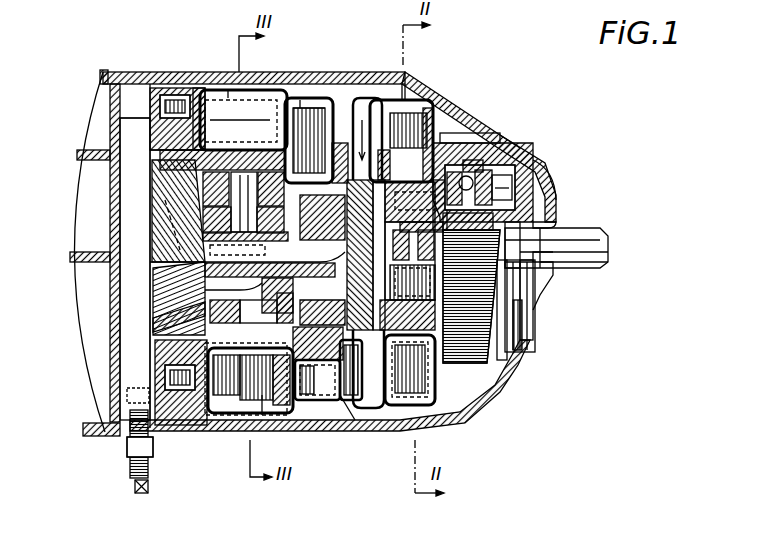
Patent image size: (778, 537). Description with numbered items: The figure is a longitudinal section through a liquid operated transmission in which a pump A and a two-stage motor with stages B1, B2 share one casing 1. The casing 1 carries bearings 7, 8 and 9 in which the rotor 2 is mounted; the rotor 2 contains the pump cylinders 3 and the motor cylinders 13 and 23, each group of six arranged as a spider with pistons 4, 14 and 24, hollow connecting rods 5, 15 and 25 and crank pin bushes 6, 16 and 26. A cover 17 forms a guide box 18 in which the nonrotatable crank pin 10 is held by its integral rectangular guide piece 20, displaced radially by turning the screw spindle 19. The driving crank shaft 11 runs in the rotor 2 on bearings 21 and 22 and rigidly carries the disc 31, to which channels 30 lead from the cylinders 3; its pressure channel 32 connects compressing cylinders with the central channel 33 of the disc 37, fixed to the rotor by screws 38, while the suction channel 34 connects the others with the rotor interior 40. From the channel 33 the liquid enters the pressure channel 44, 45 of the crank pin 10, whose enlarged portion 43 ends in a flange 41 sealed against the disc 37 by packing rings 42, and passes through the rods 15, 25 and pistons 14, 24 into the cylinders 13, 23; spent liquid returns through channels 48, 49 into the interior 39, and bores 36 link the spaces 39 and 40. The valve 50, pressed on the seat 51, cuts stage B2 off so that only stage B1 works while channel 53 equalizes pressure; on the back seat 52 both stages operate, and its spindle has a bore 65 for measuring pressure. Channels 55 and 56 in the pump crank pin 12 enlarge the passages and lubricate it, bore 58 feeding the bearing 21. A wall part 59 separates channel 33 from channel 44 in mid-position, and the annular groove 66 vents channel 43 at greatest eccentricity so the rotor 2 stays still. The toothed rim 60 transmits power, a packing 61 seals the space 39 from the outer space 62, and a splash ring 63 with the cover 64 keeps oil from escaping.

The transmission casing 1 is at (370, 77).
The rotor 2 is at (477, 140).
The cylinders of the pump 3 is at (400, 400).
The pistons of the pump 4 is at (401, 132).
The hollow connecting rods of the pump 5 is at (440, 140).
The crank pin bush of the pump 6 is at (500, 142).
The bearing 7 is at (512, 187).
The bearing 8 is at (505, 160).
The bearing 9 is at (103, 72).
The crank pin 10 is at (130, 293).
The driving crank shaft 11 is at (593, 237).
The crank pin 12 is at (532, 167).
The cylinders of motor stage B1 13 is at (325, 437).
The pistons of motor stage B1 14 is at (272, 140).
The hollow connecting rods of motor stage B1 15 is at (298, 400).
The crank pin bush of motor stage B1 16 is at (263, 412).
The cover 17 is at (108, 270).
The guide box 18 is at (123, 108).
The screw spindle 19 is at (133, 465).
The guide piece 20 is at (130, 290).
The bearing 21 is at (543, 223).
The bearing 22 is at (500, 377).
The cylinders of motor stage B2 23 is at (212, 100).
The pistons of motor stage B2 24 is at (248, 383).
The hollow connecting rods of motor stage B2 25 is at (250, 380).
The crank pin bush of motor stage B2 26 is at (163, 292).
The channels 30 is at (380, 80).
The disc 31 is at (553, 287).
The pressure channel 32 is at (440, 113).
The channel 33 is at (475, 367).
The suction channel 34 is at (533, 333).
The bores 36 is at (433, 387).
The disc 37 is at (457, 380).
The screws 38 is at (343, 80).
The interior 39 is at (182, 237).
The interior of the rotor 40 is at (510, 350).
The flange 41 is at (302, 112).
The packing rings 42 is at (348, 395).
The enlarged portion 43 is at (336, 240).
The pressure channel 44 is at (275, 278).
The pressure channel 45 is at (237, 243).
The channel 48 is at (276, 326).
The channel 49 is at (205, 268).
The valve 50 is at (208, 108).
The seat 51 is at (268, 210).
The back seat 52 is at (197, 140).
The channel 53 is at (185, 125).
The channel 55 is at (447, 127).
The channel 56 is at (550, 283).
The bore 58 is at (543, 252).
The wall part 59 is at (276, 112).
The toothed rim 60 is at (513, 110).
The packing 61 is at (150, 172).
The outer space 62 is at (364, 247).
The splash ring 63 is at (590, 237).
The cover 64 is at (527, 217).
The bore 65 is at (213, 255).
The annular groove 66 is at (388, 405).
The pump A is at (405, 95).
The first motor stage B1 is at (300, 100).
The second motor stage B2 is at (228, 97).